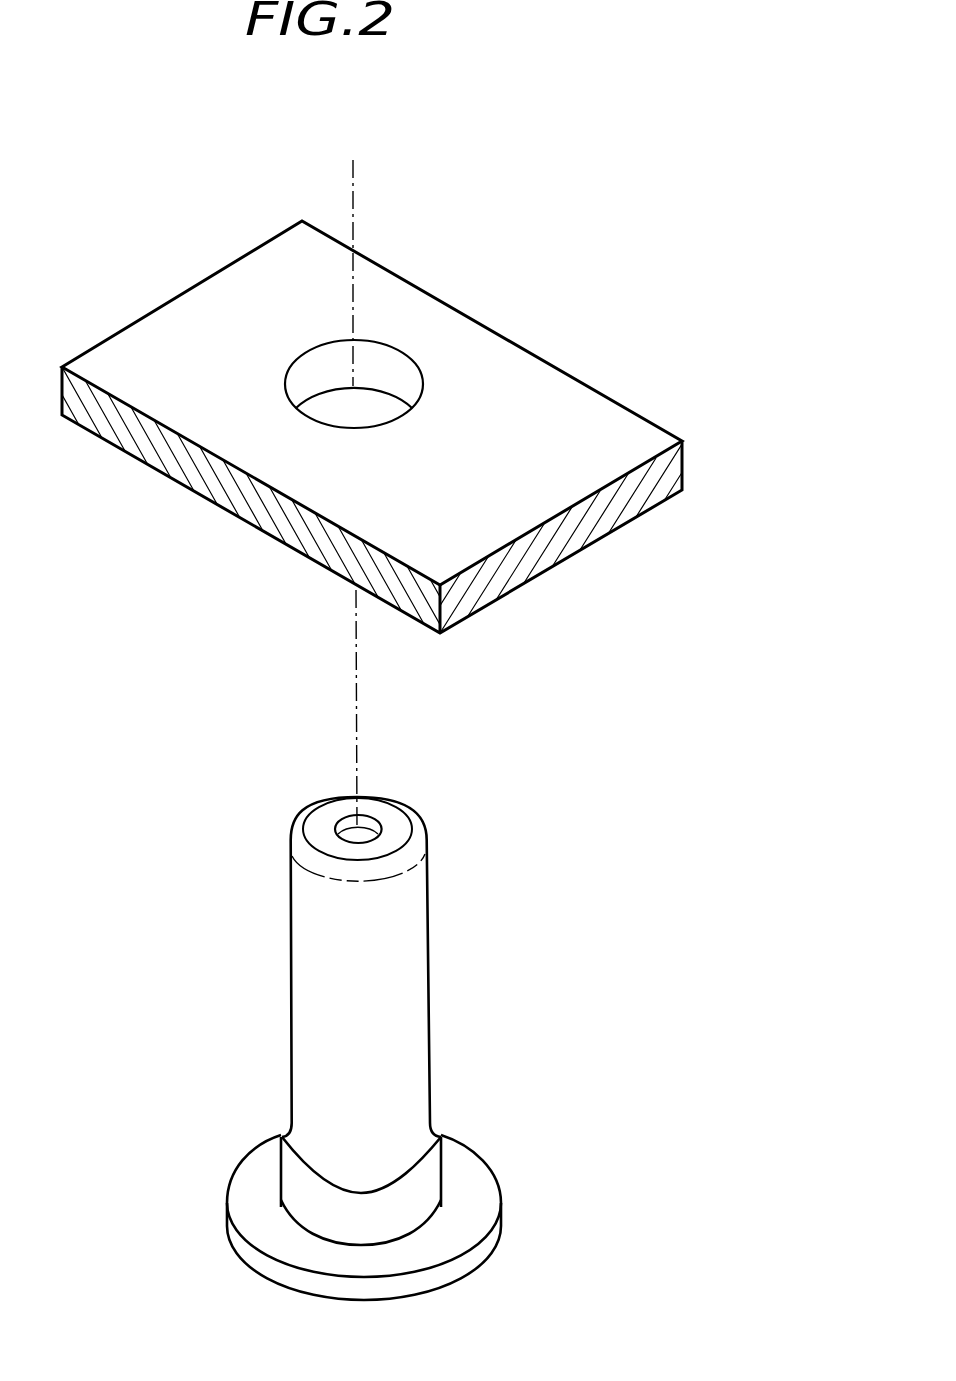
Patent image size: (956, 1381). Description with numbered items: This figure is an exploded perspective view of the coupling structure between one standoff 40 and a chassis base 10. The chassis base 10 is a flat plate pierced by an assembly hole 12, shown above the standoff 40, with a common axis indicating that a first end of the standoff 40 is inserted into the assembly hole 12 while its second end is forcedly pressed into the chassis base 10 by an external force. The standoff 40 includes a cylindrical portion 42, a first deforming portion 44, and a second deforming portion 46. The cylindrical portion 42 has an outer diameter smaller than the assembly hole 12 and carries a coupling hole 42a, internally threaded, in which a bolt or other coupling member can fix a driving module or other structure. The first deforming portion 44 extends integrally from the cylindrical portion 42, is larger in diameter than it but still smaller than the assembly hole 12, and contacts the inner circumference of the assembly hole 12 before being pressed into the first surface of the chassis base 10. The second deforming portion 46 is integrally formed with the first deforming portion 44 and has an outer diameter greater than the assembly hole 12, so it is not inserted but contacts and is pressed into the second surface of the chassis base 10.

The chassis base 10 is at (482, 350).
The assembly hole 12 is at (378, 353).
The standoff 40 is at (323, 1037).
The cylindrical portion 42 is at (365, 938).
The coupling hole 42a is at (350, 827).
The first deforming portion 44 is at (292, 1190).
The second deforming portion 46 is at (292, 1250).